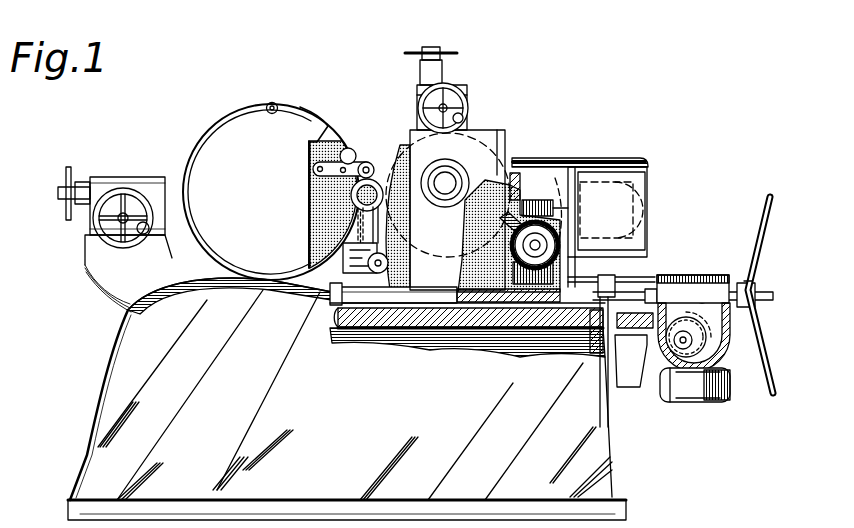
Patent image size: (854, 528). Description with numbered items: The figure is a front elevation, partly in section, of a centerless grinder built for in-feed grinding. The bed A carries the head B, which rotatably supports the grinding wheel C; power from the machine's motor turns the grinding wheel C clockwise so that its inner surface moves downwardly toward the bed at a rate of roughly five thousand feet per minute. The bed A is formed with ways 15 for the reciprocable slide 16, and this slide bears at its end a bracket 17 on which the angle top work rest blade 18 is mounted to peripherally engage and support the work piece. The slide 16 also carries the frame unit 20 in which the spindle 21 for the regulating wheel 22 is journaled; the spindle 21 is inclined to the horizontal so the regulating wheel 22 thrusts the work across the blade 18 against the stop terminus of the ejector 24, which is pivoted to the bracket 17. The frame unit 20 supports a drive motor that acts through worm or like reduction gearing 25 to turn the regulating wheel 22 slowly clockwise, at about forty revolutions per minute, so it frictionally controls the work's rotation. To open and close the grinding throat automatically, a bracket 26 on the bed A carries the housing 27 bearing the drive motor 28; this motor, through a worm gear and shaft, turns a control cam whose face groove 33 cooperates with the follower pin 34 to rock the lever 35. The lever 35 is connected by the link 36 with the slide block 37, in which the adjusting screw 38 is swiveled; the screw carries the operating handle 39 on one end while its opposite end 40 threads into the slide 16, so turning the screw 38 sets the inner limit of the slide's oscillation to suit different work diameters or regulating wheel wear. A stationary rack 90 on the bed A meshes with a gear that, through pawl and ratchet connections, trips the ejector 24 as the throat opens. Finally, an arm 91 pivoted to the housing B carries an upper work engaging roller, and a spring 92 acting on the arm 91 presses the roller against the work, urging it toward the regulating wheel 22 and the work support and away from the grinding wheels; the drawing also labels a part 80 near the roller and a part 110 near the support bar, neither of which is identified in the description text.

The bed A is at (108, 343).
The head B is at (190, 283).
The grinding wheel C is at (277, 290).
The ways 15 is at (350, 303).
The reciprocable slide 16 is at (394, 300).
The bracket 17 is at (338, 305).
The angle top work rest blade 18 is at (317, 313).
The frame unit 20 is at (515, 170).
The spindle 21 is at (490, 195).
The regulating wheel 22 is at (412, 165).
The ejector 24 is at (640, 181).
The reduction gearing 25 is at (568, 158).
The bracket 26 is at (606, 392).
The housing 27 is at (700, 393).
The drive motor 28 is at (707, 400).
The face groove 33 is at (712, 318).
The follower pin 34 is at (728, 342).
The lever 35 is at (745, 300).
The link 36 is at (678, 290).
The slide block 37 is at (655, 290).
The adjusting screw 38 is at (758, 253).
The operating handle 39 is at (746, 282).
The threaded end of adjusting screw 40 is at (648, 290).
The roller 80 is at (374, 165).
The rack 90 is at (363, 160).
The arm 91 is at (313, 190).
The spring 92 is at (313, 155).
The support bar 110 is at (355, 150).